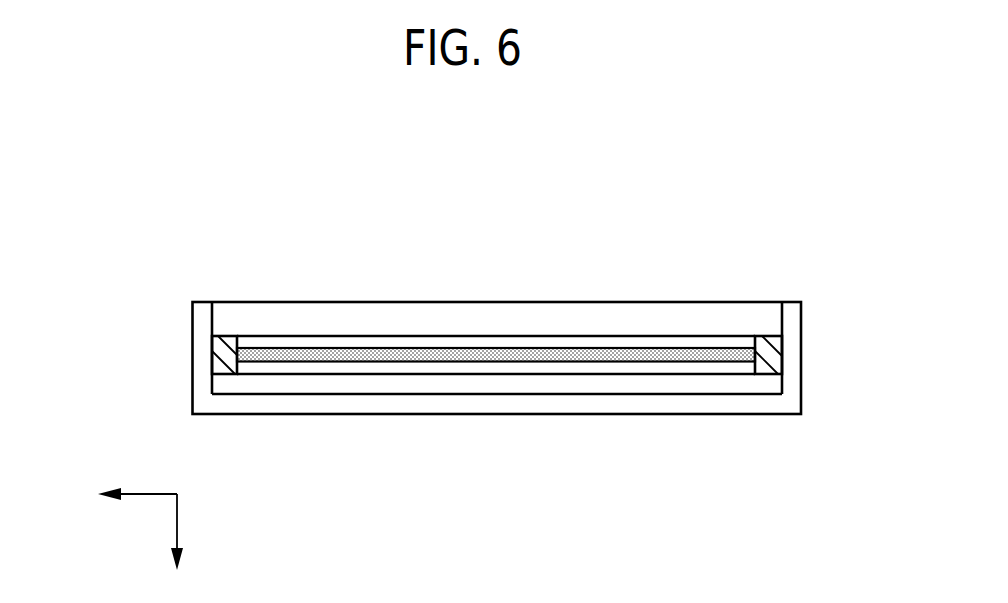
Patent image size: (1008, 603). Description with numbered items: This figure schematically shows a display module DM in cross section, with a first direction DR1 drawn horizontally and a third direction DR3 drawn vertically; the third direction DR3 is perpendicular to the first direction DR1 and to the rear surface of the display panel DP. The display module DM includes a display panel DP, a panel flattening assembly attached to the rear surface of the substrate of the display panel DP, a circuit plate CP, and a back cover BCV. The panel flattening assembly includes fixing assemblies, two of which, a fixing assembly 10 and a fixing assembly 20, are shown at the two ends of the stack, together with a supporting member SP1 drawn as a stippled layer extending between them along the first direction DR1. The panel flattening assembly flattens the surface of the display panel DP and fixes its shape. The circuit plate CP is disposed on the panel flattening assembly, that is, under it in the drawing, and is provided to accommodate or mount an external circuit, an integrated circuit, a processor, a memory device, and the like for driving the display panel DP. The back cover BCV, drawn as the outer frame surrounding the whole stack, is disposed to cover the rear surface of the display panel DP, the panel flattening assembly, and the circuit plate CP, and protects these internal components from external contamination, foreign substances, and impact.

The display module DM is at (634, 205).
The display panel DP is at (738, 304).
The supporting member SP1 is at (492, 350).
The back cover BCV is at (200, 321).
The circuit plate CP is at (778, 383).
The fixing assembly 10 is at (778, 348).
The fixing assembly 20 is at (212, 353).
The first direction DR1 is at (119, 495).
The third direction DR3 is at (177, 548).